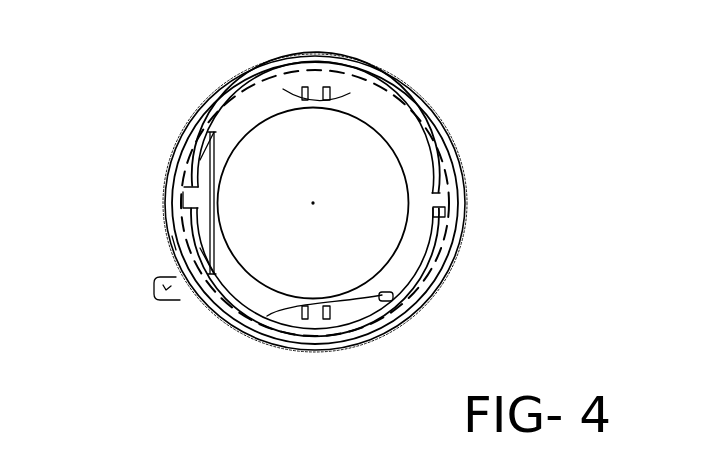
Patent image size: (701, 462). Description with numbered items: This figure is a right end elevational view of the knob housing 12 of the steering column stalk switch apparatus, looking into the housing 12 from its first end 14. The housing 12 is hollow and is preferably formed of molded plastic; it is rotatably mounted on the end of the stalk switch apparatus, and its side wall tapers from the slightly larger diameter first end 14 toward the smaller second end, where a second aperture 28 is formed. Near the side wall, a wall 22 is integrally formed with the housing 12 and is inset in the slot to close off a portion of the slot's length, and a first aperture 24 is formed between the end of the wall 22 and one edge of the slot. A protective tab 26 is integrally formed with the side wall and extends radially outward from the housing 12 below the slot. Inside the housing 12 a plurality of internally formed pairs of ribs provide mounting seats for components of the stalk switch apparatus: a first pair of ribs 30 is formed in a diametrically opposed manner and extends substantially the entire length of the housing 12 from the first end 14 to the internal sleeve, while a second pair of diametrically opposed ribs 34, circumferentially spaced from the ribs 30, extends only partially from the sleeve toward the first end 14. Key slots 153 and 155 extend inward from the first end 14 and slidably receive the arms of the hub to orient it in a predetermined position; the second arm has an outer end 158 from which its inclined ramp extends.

The knob housing 12 is at (340, 1).
The first end 14 is at (452, 157).
The wall 22 is at (198, 163).
The first aperture 24 is at (185, 238).
The protective tab 26 is at (158, 294).
The second aperture 28 is at (415, 238).
The first pair of ribs 30 is at (350, 93).
The second pair of ribs 34 is at (282, 86).
The key slot 153 is at (183, 197).
The key slot 155 is at (437, 204).
The outer end 158 is at (395, 298).